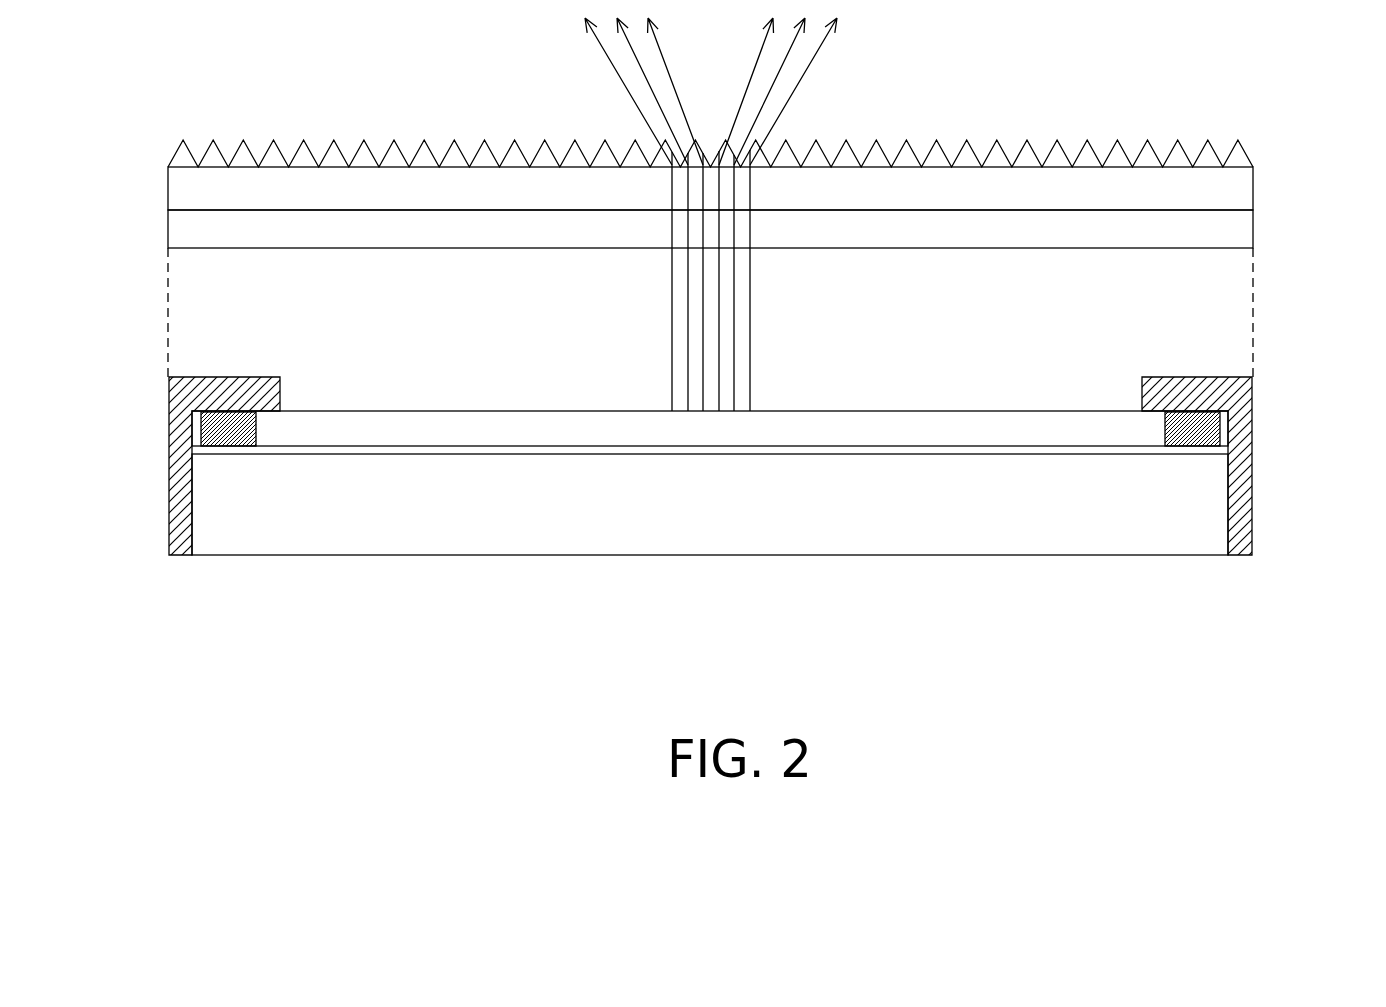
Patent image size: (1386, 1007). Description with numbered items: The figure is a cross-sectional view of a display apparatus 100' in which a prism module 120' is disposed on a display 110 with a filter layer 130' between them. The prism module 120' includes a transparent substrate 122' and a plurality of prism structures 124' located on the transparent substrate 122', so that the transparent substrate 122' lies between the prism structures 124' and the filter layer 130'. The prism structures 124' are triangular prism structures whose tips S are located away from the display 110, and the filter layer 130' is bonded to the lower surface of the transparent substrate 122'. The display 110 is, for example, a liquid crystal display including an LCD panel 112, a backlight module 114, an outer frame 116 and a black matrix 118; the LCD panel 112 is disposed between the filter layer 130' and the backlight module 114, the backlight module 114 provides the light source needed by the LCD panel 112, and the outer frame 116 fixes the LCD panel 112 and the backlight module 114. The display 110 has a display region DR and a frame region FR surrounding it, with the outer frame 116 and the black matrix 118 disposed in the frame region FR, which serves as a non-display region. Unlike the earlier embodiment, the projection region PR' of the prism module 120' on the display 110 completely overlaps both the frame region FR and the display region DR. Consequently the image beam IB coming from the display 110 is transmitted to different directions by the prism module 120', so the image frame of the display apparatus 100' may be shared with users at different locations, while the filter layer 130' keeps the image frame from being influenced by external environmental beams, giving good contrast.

The display apparatus 100' is at (735, 374).
The display 110 is at (710, 551).
The LCD panel 112 is at (1152, 428).
The backlight module 114 is at (1215, 528).
The outer frame 116 is at (178, 491).
The black matrix 118 is at (212, 428).
The prism module 120' is at (754, 406).
The transparent substrate 122' is at (751, 189).
The prism structures 124' is at (754, 150).
The filter layer 130' is at (751, 231).
The tips S is at (1236, 148).
The frame region FR is at (280, 372).
The projection region PR' is at (710, 296).
The image beam IB is at (750, 364).
The display region DR is at (1160, 470).